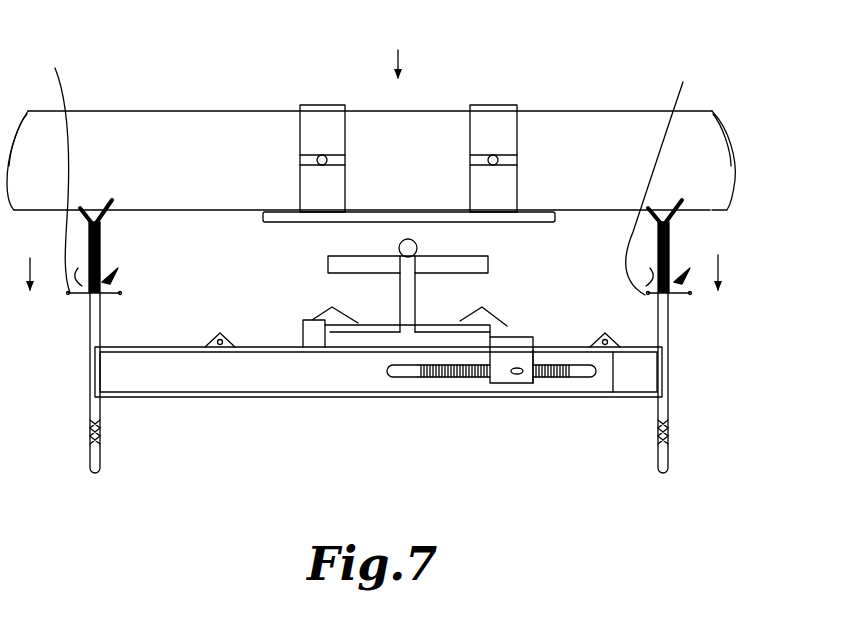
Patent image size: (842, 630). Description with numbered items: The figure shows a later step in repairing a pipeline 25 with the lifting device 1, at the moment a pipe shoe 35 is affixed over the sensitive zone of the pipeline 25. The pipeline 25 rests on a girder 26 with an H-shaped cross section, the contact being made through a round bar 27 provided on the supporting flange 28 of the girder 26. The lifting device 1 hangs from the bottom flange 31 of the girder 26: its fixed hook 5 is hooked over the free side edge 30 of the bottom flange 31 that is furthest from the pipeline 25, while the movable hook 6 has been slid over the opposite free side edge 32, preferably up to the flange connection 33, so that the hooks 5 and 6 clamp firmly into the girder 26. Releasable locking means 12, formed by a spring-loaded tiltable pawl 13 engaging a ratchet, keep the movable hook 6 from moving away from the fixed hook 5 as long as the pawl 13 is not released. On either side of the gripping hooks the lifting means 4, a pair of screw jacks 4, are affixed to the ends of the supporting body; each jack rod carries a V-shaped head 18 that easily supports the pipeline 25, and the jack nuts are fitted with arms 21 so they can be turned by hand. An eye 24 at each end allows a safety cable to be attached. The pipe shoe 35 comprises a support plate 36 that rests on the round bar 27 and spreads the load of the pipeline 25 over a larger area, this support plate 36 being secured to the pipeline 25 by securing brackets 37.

The lifting device 1 is at (176, 458).
The lifting means 4 is at (92, 331).
The hook 5 is at (312, 323).
The movable hook 6 is at (500, 323).
The releasable locking means 12 is at (548, 405).
The spring-loaded tiltable pawl 13 is at (517, 386).
The V-shaped head 18 is at (108, 204).
The arms 21 is at (363, 170).
The eye 24 is at (212, 345).
The pipeline 25 is at (590, 145).
The girder 26 is at (328, 263).
The round bar 27 is at (415, 236).
The supporting flange 28 is at (490, 265).
The free side edge 30 is at (322, 340).
The bottom flange 31 is at (408, 352).
The opposite free side edge 32 is at (496, 345).
The flange connection 33 is at (415, 284).
The pipe shoe 35 is at (395, 46).
The support plate 36 is at (292, 214).
The securing brackets 37 is at (322, 118).